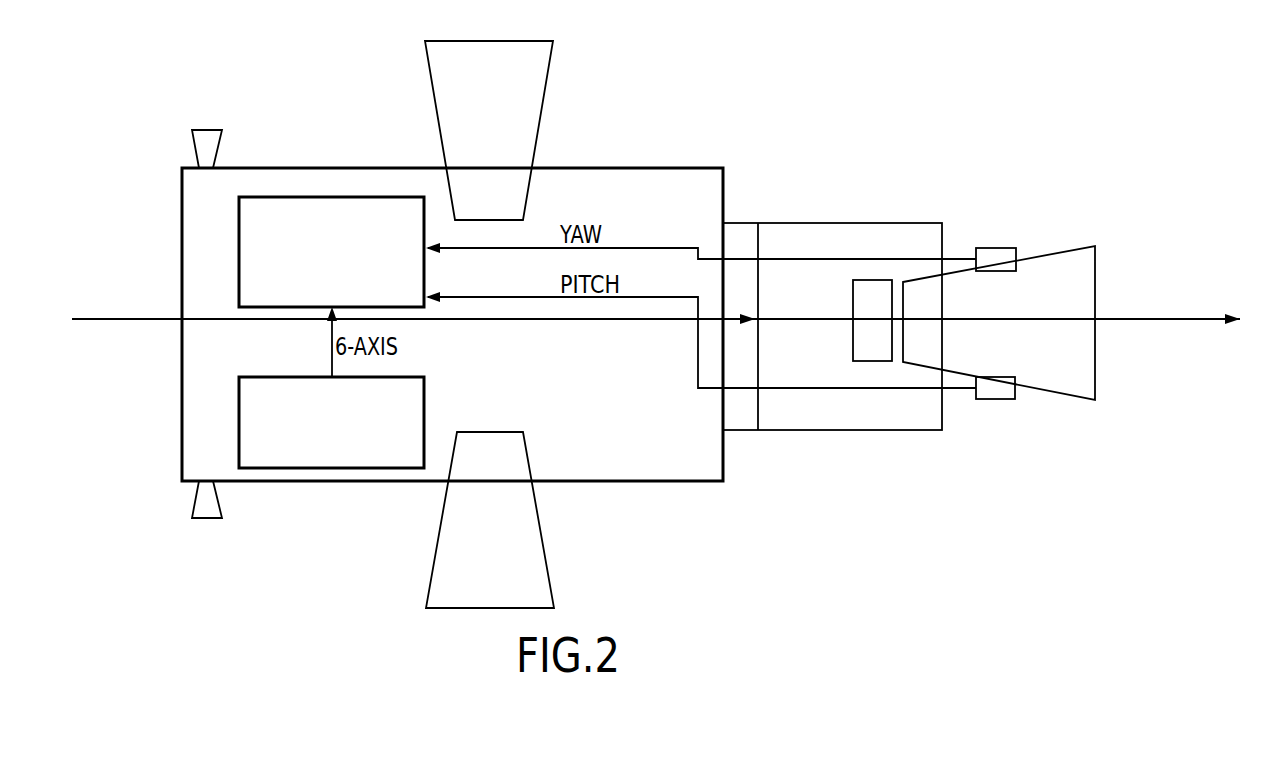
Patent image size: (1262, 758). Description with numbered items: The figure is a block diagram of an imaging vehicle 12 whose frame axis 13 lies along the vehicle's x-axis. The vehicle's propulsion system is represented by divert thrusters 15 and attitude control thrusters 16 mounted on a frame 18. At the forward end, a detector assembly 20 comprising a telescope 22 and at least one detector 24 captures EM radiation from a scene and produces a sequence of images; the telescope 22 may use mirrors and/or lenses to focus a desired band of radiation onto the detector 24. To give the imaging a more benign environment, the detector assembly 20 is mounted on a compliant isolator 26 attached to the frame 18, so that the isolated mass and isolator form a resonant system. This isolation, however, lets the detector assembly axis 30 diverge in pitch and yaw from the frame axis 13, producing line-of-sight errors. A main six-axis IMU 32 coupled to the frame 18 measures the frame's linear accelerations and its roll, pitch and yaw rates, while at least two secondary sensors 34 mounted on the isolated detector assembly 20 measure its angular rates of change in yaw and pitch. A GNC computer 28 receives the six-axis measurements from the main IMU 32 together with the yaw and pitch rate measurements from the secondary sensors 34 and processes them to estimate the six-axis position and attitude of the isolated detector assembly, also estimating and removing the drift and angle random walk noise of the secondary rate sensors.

The imaging vehicle 12 is at (482, 282).
The frame axis 13 is at (615, 322).
The divert thrusters 15 is at (430, 586).
The attitude control thrusters 16 is at (209, 520).
The frame 18 is at (642, 450).
The detector assembly 20 is at (981, 286).
The telescope 22 is at (1064, 250).
The detector 24 is at (852, 288).
The compliant isolator 26 is at (752, 222).
The GNC computer 28 is at (240, 225).
The detector assembly axis 30 is at (1153, 317).
The main 6-axis IMU 32 is at (240, 437).
The secondary sensors 34 is at (998, 246).